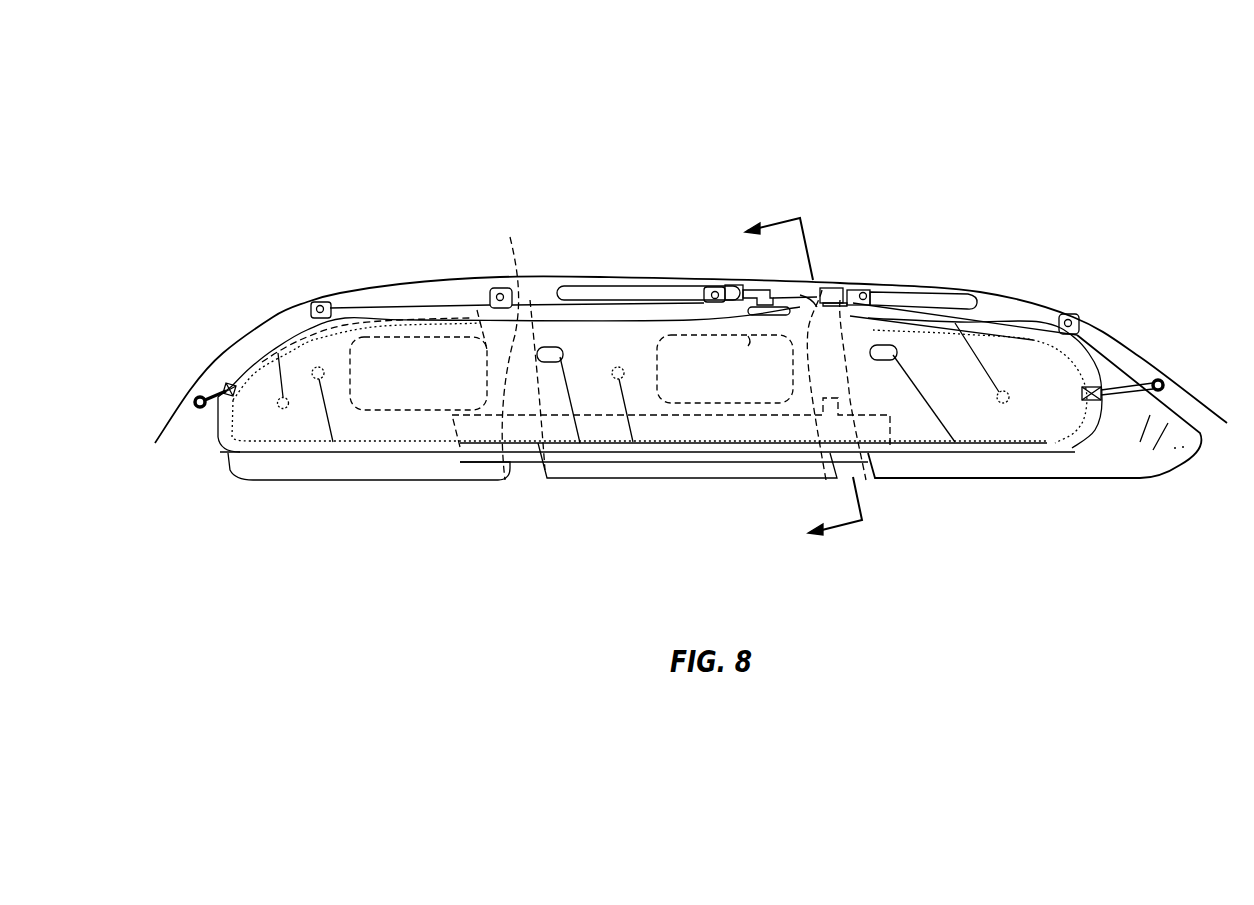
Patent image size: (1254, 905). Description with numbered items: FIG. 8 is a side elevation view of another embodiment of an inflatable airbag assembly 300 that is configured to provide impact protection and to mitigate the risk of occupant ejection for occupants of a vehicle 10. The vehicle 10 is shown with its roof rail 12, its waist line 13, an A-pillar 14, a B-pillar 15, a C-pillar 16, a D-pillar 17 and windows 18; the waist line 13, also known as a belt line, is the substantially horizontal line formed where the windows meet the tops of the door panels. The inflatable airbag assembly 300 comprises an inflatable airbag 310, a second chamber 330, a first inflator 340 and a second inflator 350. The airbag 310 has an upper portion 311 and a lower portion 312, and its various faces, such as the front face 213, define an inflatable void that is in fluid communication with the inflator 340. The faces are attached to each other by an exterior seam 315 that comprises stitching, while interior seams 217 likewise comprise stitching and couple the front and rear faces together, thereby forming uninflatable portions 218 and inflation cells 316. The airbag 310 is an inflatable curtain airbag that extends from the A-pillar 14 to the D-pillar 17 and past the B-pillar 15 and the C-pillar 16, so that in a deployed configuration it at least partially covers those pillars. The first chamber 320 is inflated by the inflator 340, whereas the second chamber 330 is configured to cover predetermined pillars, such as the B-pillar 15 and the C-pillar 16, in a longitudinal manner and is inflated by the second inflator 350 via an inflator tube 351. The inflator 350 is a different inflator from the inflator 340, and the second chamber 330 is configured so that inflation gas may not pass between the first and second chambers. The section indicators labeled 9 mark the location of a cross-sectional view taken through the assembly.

The inflatable airbag assembly 300 is at (251, 152).
The inflatable airbag 310 is at (428, 252).
The upper portion 311 is at (338, 310).
The D-pillar 17 is at (215, 380).
The C-pillar 16 is at (511, 345).
The inflation cells 316 is at (587, 357).
The first inflator 340 is at (653, 290).
The B-pillar 15 is at (822, 290).
The inflator tube 351 is at (840, 300).
The second inflator 350 is at (887, 292).
The roof rail 12 is at (1003, 308).
The vehicle 10 is at (1110, 268).
The A-pillar 14 is at (1133, 357).
The windows 18 is at (1148, 422).
The front face 213 is at (644, 350).
The uninflatable portions 218 is at (434, 380).
The interior seams 217 is at (753, 340).
The lower portion 312 is at (293, 423).
The waist line 13 is at (277, 483).
The first chamber 320 is at (420, 440).
The second chamber 330 is at (460, 457).
The exterior seam 315 is at (1081, 443).
The section line 9- 9 is at (790, 382).